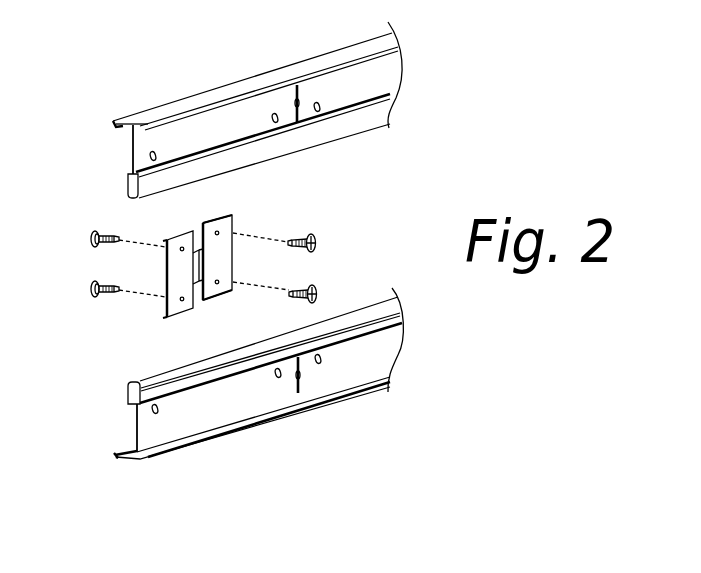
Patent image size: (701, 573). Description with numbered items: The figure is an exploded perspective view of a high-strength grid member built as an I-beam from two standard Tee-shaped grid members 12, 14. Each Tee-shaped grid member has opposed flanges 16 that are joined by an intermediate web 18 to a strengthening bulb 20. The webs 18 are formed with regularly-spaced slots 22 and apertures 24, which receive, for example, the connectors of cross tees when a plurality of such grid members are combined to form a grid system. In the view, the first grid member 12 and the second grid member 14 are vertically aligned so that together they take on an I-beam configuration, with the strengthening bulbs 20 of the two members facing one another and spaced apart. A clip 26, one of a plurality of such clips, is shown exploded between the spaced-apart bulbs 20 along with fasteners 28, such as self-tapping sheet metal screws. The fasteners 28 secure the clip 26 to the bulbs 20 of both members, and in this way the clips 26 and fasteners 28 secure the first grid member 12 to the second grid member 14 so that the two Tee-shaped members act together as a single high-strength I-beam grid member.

The Tee-shaped grid member 12 is at (137, 425).
The Tee-shaped grid member 14 is at (133, 143).
The flange 16 is at (113, 121).
The web 18 is at (245, 130).
The strengthening bulb 20 is at (128, 184).
The slot 22 is at (303, 100).
The aperture 24 is at (276, 123).
The clip 26 is at (222, 256).
The fastener 28 is at (90, 238).